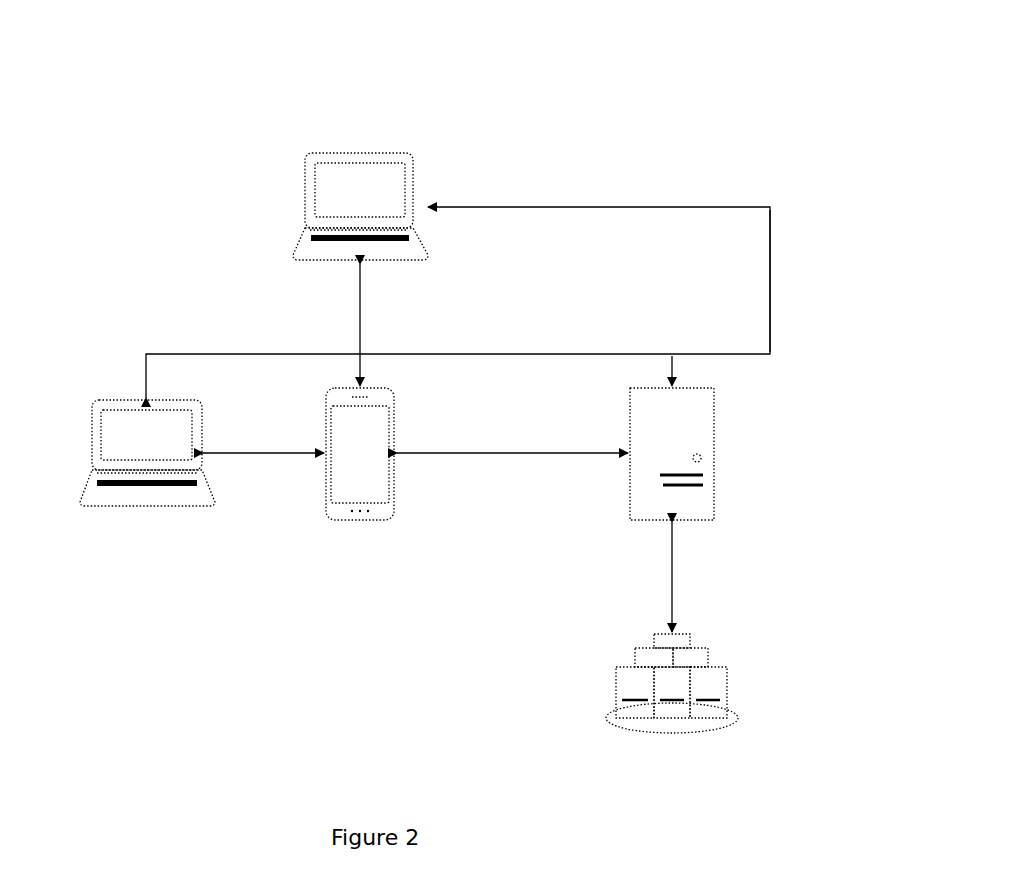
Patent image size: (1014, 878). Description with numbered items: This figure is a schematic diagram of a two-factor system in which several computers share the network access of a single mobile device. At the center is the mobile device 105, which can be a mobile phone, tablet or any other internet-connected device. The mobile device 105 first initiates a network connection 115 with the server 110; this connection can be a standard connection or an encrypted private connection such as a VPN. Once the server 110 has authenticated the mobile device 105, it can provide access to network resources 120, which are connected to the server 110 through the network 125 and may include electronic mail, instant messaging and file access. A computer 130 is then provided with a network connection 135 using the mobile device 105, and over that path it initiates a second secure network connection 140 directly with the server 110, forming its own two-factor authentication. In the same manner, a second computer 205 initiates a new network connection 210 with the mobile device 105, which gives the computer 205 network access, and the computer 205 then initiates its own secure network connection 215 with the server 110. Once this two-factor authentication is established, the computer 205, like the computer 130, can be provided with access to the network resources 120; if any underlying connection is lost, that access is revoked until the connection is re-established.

The mobile device 105 is at (349, 525).
The server 110 is at (713, 450).
The network connection 115 is at (512, 455).
The network resources 120 is at (706, 683).
The network 125 is at (672, 572).
The computer 130 is at (113, 405).
The network connection 135 is at (260, 455).
The second network connection 140 is at (224, 355).
The second computer 205 is at (376, 150).
The network connection 210 is at (360, 330).
The secure network connection 215 is at (776, 269).